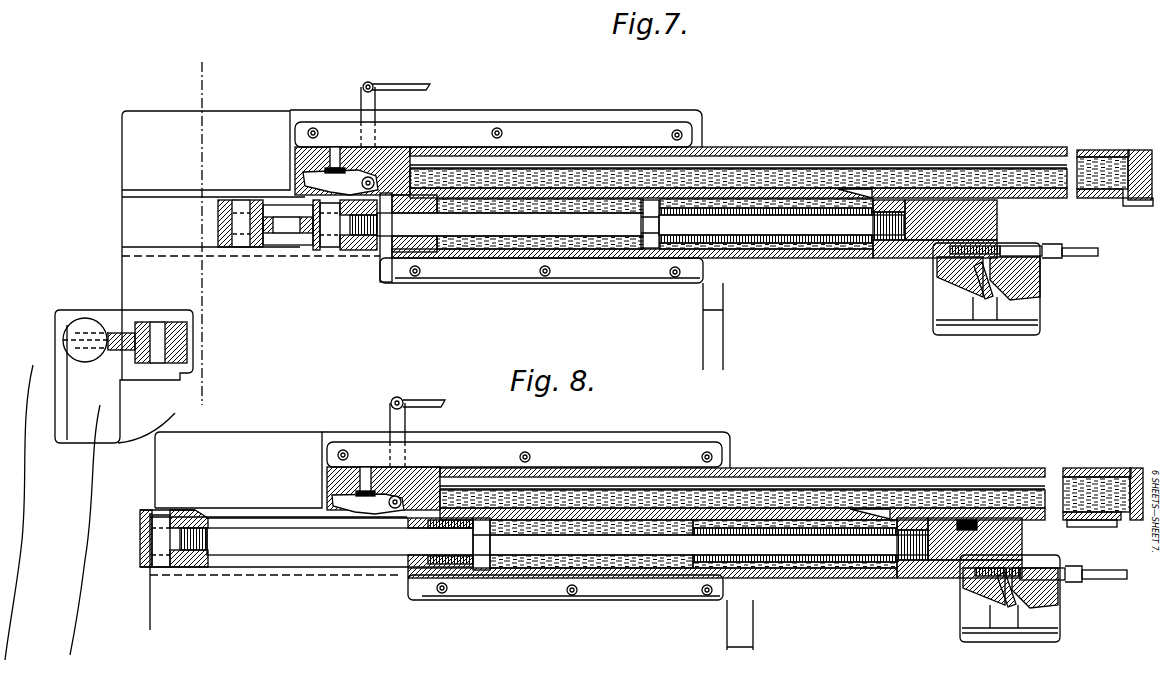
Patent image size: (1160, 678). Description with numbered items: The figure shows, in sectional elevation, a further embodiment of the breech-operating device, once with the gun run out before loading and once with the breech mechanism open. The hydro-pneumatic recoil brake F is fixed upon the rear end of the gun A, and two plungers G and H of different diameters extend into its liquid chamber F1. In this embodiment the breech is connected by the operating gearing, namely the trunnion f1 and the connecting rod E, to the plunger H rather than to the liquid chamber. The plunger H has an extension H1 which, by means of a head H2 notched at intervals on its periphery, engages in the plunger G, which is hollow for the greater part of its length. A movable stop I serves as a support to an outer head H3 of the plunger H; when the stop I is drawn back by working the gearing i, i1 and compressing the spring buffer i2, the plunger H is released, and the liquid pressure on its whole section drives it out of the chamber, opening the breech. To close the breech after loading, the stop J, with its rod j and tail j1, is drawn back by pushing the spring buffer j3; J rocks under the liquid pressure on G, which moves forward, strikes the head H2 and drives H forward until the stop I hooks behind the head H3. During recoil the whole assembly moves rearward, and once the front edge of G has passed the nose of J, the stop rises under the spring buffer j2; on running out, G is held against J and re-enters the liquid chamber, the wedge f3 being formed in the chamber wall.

In FIG. 7, the rear end of the gun A is at (222, 118).
In FIG. 8, the rear end of the gun A is at (247, 438).
In FIG. 7, the connecting rod E is at (286, 225).
In FIG. 7, the recoil brake F is at (995, 149).
In FIG. 8, the recoil brake F is at (763, 472).
In FIG. 7, the liquid chamber F1 is at (587, 242).
In FIG. 8, the liquid chamber F1 is at (627, 562).
In FIG. 7, the trunnion f1 is at (336, 241).
In FIG. 8, the trunnion f1 is at (163, 560).
In FIG. 7, the valve wedge f3 is at (847, 200).
In FIG. 8, the valve wedge f3 is at (873, 527).
In FIG. 7, the plunger G is at (762, 243).
In FIG. 8, the plunger G is at (847, 560).
In FIG. 7, the plunger H is at (490, 225).
In FIG. 8, the plunger H is at (288, 542).
In FIG. 8, the extension H1 is at (525, 543).
In FIG. 7, the head H2 is at (863, 263).
In FIG. 8, the head H2 is at (959, 548).
In FIG. 7, the outer head H3 is at (366, 253).
In FIG. 8, the outer head H3 is at (199, 562).
In FIG. 7, the movable stop I is at (300, 182).
In FIG. 8, the movable stop I is at (345, 500).
In FIG. 7, the gearing i is at (420, 84).
In FIG. 8, the gearing i is at (444, 404).
In FIG. 7, the gearing i1 is at (368, 100).
In FIG. 8, the gearing i1 is at (399, 421).
In FIG. 7, the spring buffer i2 is at (347, 170).
In FIG. 8, the spring buffer i2 is at (366, 470).
In FIG. 7, the stop J is at (1000, 247).
In FIG. 8, the stop J is at (1033, 567).
In FIG. 7, the valve rod j is at (1040, 243).
In FIG. 8, the valve rod j is at (1070, 568).
In FIG. 7, the rod tail j1 is at (1083, 257).
In FIG. 8, the rod tail j1 is at (1110, 572).
In FIG. 7, the spring buffer j2 is at (950, 277).
In FIG. 8, the spring buffer j2 is at (1000, 590).
In FIG. 7, the spring buffer j3 is at (997, 287).
In FIG. 8, the spring buffer j3 is at (1033, 607).